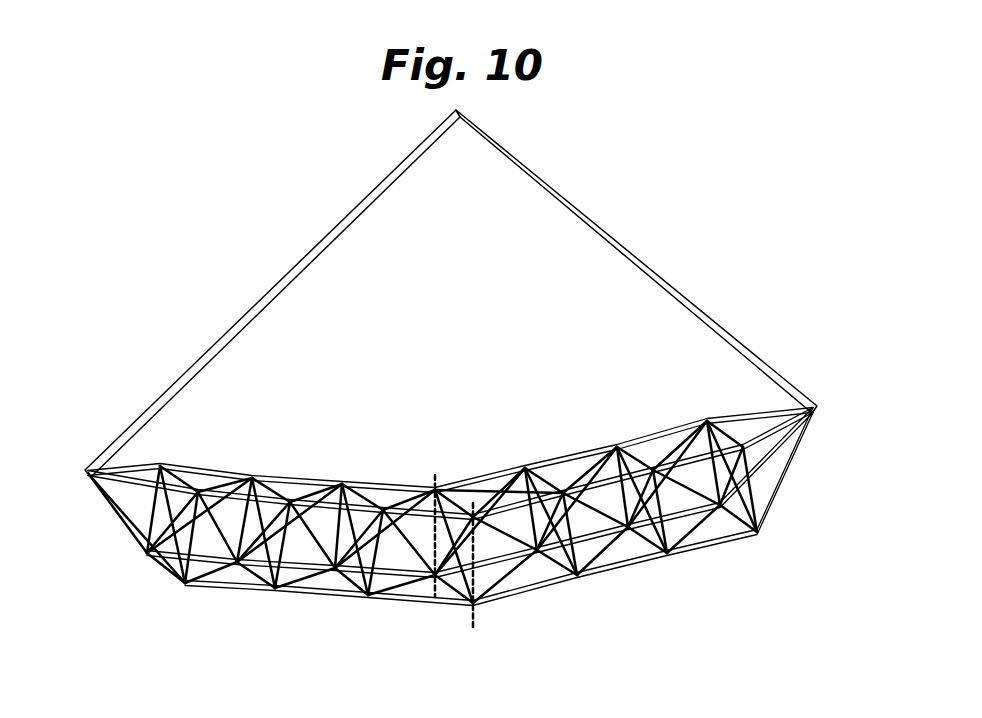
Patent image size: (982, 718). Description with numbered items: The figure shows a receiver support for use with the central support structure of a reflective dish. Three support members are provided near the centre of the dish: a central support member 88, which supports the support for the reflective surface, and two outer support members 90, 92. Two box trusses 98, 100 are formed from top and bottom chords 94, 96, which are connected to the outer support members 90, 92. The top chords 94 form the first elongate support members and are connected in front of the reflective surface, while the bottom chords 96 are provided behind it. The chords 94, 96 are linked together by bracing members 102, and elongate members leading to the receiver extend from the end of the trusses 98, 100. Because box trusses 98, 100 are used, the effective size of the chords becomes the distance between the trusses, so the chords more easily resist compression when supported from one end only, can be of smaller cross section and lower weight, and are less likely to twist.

The central support member 88 is at (433, 587).
The outer support member 90 is at (408, 499).
The outer support member 92 is at (497, 558).
The top chord 94 is at (618, 447).
The bottom chord 96 is at (667, 555).
The box truss 98 is at (657, 406).
The box truss 100 is at (301, 604).
The bracing member 102 is at (243, 583).